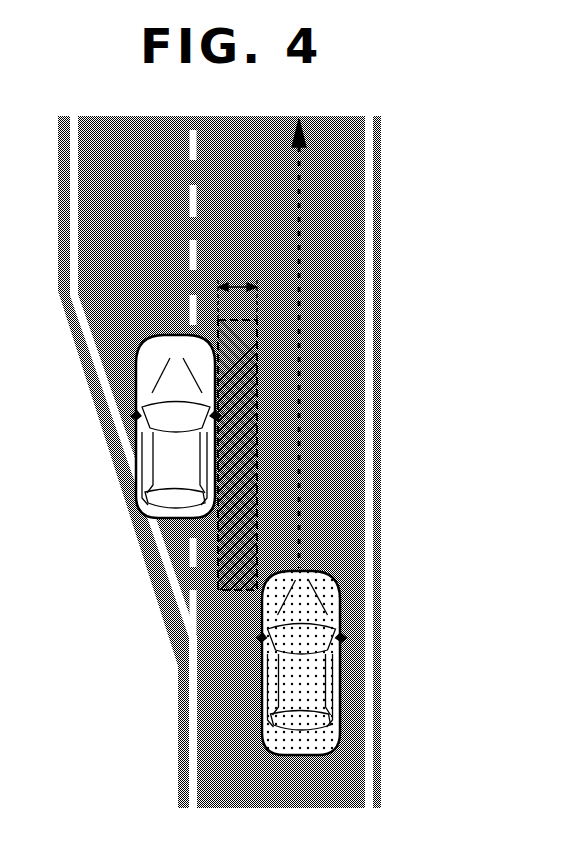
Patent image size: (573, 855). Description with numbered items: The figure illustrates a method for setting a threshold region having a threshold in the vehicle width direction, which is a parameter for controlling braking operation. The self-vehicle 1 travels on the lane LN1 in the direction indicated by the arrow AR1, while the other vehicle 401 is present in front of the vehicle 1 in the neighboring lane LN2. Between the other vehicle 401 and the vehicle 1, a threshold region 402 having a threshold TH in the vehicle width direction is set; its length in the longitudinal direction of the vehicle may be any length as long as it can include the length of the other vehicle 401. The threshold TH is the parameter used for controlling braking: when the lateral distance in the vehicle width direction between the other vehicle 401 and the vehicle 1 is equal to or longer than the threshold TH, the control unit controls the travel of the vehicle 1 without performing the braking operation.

The vehicle 1 is at (305, 603).
The other vehicle 401 is at (180, 462).
The threshold region 402 is at (253, 442).
The arrow AR1 is at (300, 226).
The threshold TH is at (237, 286).
The lane LN1 is at (278, 788).
The adjacent lane LN2 is at (131, 153).